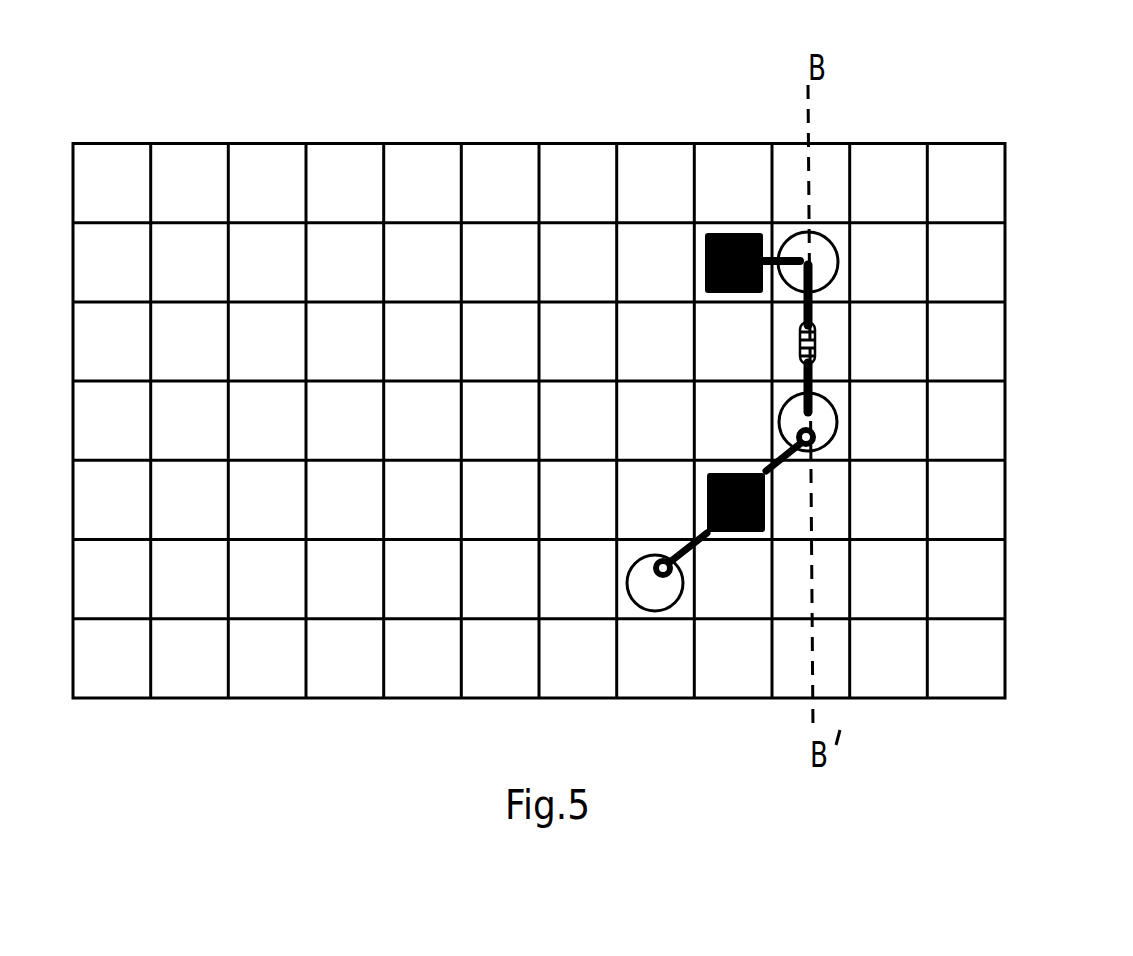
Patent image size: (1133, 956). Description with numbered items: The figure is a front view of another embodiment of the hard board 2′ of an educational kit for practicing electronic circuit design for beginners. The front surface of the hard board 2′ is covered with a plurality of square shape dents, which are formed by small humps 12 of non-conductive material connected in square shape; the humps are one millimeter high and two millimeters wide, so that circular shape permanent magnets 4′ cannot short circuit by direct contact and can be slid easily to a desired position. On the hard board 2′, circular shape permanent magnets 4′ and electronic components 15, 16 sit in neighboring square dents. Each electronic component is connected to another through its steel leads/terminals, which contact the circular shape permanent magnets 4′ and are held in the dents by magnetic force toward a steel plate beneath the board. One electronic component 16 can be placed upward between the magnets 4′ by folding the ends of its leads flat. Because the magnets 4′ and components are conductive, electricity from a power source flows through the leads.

The hard board 2′ is at (1084, 40).
The small humps 12 is at (539, 382).
The electronic component 15 is at (715, 180).
The circular shape permanent magnet 4′ is at (970, 45).
The electronic component 16 is at (710, 624).